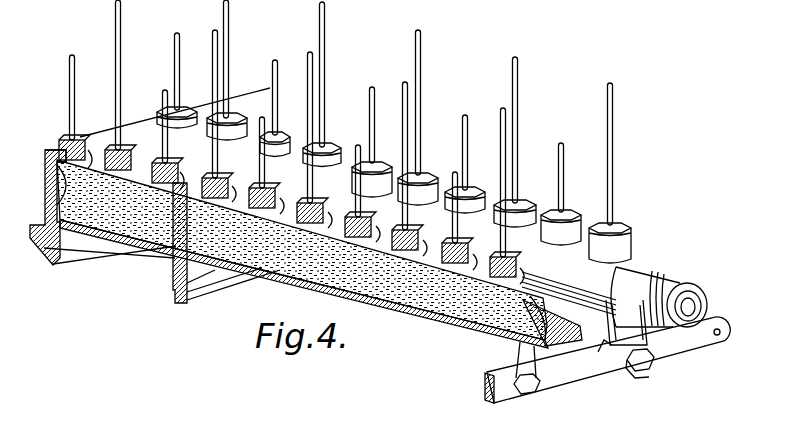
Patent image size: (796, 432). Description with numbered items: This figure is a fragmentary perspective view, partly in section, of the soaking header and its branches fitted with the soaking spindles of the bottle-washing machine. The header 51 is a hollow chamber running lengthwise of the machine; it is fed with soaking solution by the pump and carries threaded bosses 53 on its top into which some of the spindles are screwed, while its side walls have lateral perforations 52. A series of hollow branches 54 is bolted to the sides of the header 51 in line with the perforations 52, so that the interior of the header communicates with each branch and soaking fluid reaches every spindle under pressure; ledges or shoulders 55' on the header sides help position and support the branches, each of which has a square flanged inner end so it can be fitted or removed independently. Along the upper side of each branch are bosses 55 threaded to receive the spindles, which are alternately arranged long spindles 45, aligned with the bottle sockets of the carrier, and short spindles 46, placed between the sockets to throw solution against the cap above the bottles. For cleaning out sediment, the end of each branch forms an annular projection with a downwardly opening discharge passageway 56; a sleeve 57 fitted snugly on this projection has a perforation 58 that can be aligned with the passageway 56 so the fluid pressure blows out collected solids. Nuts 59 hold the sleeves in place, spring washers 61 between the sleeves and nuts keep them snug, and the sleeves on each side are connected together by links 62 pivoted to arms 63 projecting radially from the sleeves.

The long spindles 45 is at (123, 22).
The short spindles 46 is at (162, 97).
The header 51 is at (135, 250).
The lateral perforations 52 is at (50, 172).
The threaded bosses 53 is at (146, 165).
The hollow branches 54 is at (420, 305).
The bosses 55 is at (290, 206).
The ledges or shoulders 55' is at (147, 226).
The discharge passageway 56 is at (510, 337).
The sleeve 57 is at (640, 268).
The perforation 58 is at (596, 350).
The nuts 59 is at (703, 306).
The spring washers 61 is at (678, 286).
The links 62 is at (677, 353).
The arms 63 is at (523, 367).